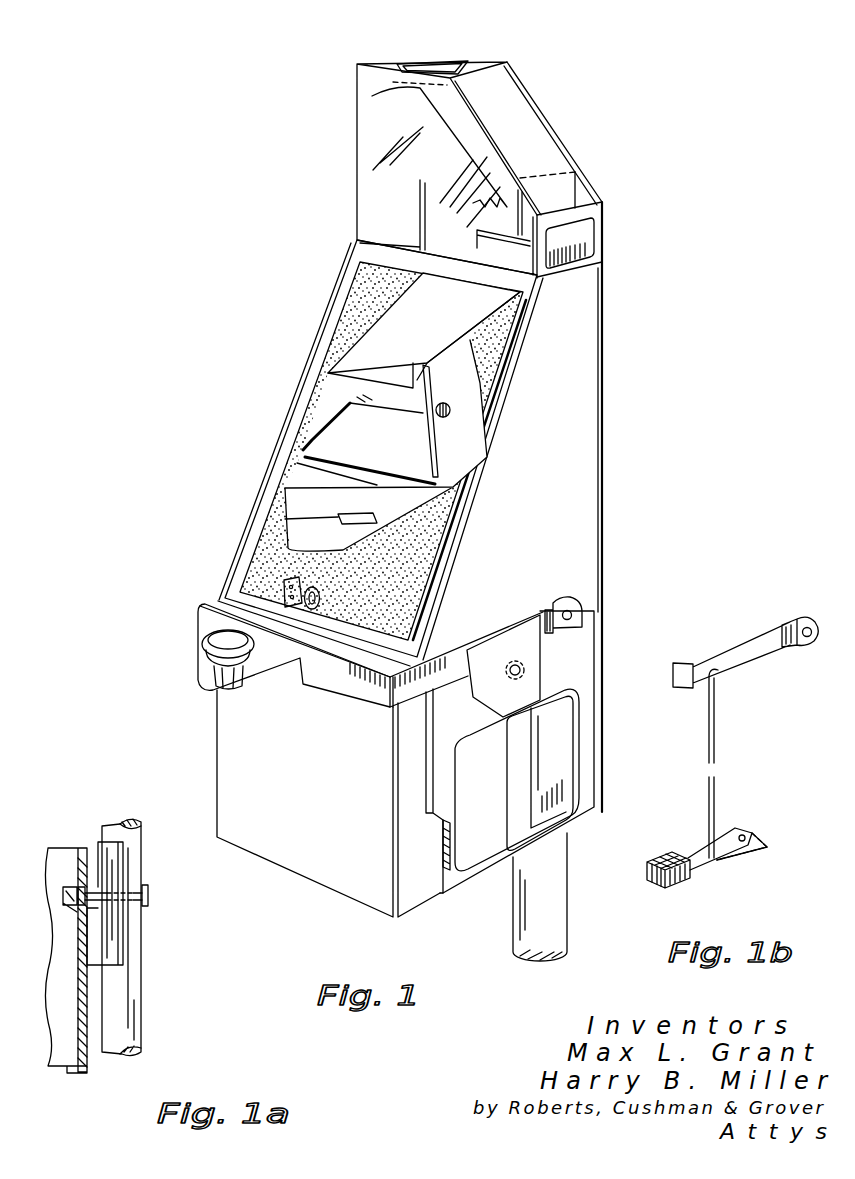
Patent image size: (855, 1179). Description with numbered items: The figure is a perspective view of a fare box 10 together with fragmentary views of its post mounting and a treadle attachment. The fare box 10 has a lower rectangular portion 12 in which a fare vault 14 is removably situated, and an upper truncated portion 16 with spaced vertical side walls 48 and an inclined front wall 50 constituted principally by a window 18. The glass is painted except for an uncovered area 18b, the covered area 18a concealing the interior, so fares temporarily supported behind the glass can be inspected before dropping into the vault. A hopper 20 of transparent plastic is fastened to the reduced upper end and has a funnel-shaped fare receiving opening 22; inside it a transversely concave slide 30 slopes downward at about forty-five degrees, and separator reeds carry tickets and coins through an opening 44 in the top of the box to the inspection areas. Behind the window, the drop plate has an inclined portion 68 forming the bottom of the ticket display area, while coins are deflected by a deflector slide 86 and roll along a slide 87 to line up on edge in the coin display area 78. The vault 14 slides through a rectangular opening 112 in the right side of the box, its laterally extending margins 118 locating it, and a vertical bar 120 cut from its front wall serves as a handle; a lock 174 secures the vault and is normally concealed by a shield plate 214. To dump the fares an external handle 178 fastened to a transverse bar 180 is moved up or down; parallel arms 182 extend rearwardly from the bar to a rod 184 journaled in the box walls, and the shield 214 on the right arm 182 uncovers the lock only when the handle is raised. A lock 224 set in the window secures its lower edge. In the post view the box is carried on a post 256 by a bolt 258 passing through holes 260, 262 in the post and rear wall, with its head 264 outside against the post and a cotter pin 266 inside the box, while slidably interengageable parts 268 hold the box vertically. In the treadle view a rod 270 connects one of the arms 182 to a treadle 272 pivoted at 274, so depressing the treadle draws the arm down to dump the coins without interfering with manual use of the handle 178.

In FIG. 1, the fare box 10 is at (616, 470).
In FIG. 1, the lower rectangular portion 12 is at (232, 805).
In FIG. 1A, the lower rectangular portion 12 is at (75, 1079).
In FIG. 1, the fare vault 14 is at (588, 748).
In FIG. 1, the upper truncated portion 16 is at (580, 399).
In FIG. 1, the window 18 is at (288, 481).
In FIG. 1, the covered area of the glass 18a is at (417, 554).
In FIG. 1, the uncovered area of the glass 18b is at (383, 348).
In FIG. 1, the hopper 20 is at (545, 131).
In FIG. 1, the fare receiving funnel-shaped opening 22 is at (438, 64).
In FIG. 1, the slide 30 is at (400, 118).
In FIG. 1, the opening 44 is at (452, 248).
In FIG. 1, the side walls 48 is at (586, 538).
In FIG. 1, the inclined front wall 50 is at (305, 393).
In FIG. 1, the inclined portion 68 is at (327, 440).
In FIG. 1, the display area of coins 78 is at (297, 541).
In FIG. 1, the deflector slide 86 is at (424, 430).
In FIG. 1, the slide 87 is at (371, 517).
In FIG. 1, the rectangular opening 112 is at (447, 880).
In FIG. 1, the laterally extending margins 118 is at (580, 815).
In FIG. 1, the vertical bar 120 is at (517, 780).
In FIG. 1, the lock 174 is at (523, 670).
In FIG. 1, the handle 178 is at (192, 663).
In FIG. 1, the bar 180 is at (347, 688).
In FIG. 1, the arms 182 is at (212, 606).
In FIG. 1B, the arms 182 is at (738, 656).
In FIG. 1, the rod 184 is at (590, 597).
In FIG. 1, the shield plate 214 is at (522, 618).
In FIG. 1, the lock 224 is at (338, 581).
In FIG. 1A, the post 256 is at (127, 1028).
In FIG. 1A, the bolt 258 is at (90, 880).
In FIG. 1A, the hole 260 is at (143, 913).
In FIG. 1A, the hole 262 is at (100, 845).
In FIG. 1A, the head 264 is at (148, 895).
In FIG. 1A, the cotter pin 266 is at (68, 887).
In FIG. 1A, the slidably interengageable parts 268 is at (92, 958).
In FIG. 1B, the rod 270 is at (716, 720).
In FIG. 1B, the treadle 272 is at (688, 855).
In FIG. 1B, the pivot 274 is at (741, 842).